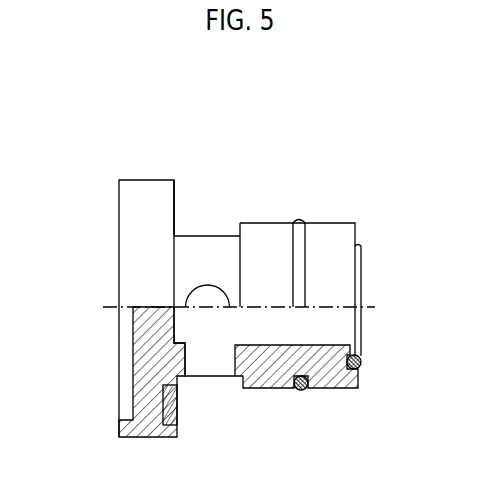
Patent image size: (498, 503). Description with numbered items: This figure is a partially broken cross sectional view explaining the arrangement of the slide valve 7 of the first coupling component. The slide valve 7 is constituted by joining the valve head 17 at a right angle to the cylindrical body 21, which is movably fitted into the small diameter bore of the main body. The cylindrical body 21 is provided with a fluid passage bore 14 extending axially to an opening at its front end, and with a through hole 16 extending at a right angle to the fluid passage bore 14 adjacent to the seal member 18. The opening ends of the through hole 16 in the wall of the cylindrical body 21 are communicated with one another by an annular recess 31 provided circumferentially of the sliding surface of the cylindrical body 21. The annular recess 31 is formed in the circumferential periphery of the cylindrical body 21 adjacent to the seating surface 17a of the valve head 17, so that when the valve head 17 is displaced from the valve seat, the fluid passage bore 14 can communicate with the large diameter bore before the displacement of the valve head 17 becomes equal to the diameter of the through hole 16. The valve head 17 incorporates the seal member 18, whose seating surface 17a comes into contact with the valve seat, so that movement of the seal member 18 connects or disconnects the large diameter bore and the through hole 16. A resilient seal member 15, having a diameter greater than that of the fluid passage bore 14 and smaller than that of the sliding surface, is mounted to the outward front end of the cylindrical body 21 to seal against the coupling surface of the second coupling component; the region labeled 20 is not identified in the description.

The slide valve 7 is at (316, 175).
The fluid passage bore 14 is at (331, 338).
The resilient seal member 15 is at (362, 355).
The through hole 16 is at (197, 297).
The valve head 17 is at (127, 202).
The seating surface 17a is at (175, 192).
The seal member 18 is at (172, 405).
The groove 20 is at (302, 220).
The cylindrical body 21 is at (338, 235).
The annular recess 31 is at (212, 236).